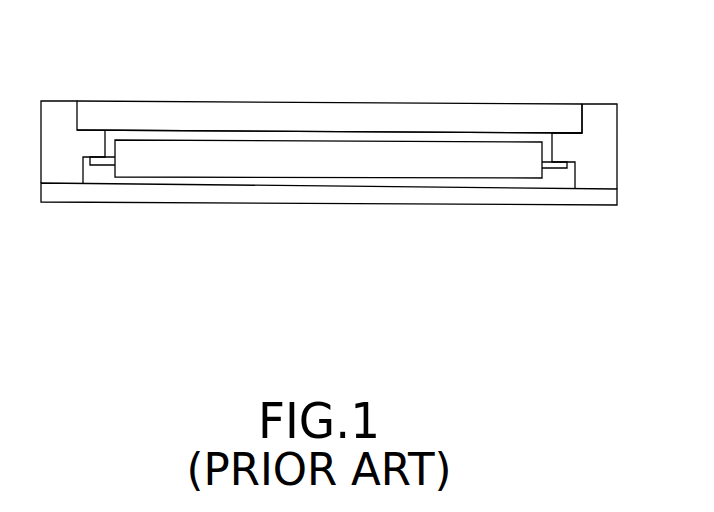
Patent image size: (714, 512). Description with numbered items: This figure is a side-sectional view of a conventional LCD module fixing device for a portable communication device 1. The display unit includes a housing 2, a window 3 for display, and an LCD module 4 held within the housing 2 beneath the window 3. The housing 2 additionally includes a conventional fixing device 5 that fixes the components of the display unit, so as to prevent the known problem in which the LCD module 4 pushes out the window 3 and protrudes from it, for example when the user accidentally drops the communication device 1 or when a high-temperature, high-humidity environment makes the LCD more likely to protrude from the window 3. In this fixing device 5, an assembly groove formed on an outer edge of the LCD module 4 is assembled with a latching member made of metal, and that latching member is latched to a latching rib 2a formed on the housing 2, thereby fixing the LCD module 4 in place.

The communication device 1 is at (338, 195).
The housing 2 is at (603, 133).
The latching rib 2a is at (563, 145).
The window 3 is at (326, 117).
The LCD module 4 is at (442, 158).
The fixing device 5 is at (558, 167).